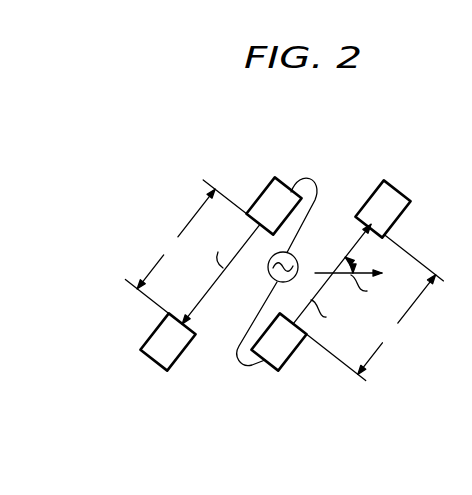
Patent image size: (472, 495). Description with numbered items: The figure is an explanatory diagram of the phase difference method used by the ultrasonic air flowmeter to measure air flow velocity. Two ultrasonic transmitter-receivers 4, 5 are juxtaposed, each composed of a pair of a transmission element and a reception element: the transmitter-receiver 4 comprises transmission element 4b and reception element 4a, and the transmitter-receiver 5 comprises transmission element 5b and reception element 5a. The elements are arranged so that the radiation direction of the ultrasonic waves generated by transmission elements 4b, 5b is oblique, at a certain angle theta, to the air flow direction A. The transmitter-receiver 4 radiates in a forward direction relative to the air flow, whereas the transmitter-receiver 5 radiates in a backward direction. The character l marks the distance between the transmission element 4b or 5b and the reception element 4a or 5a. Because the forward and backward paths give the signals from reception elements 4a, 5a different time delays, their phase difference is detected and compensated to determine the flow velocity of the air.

The ultrasonic transmitter-receiver 4 is at (349, 267).
The reception element 4a is at (393, 198).
The transmission element 4b is at (283, 354).
The ultrasonic transmitter-receiver 5 is at (214, 258).
The reception element 5a is at (162, 350).
The transmission element 5b is at (278, 194).